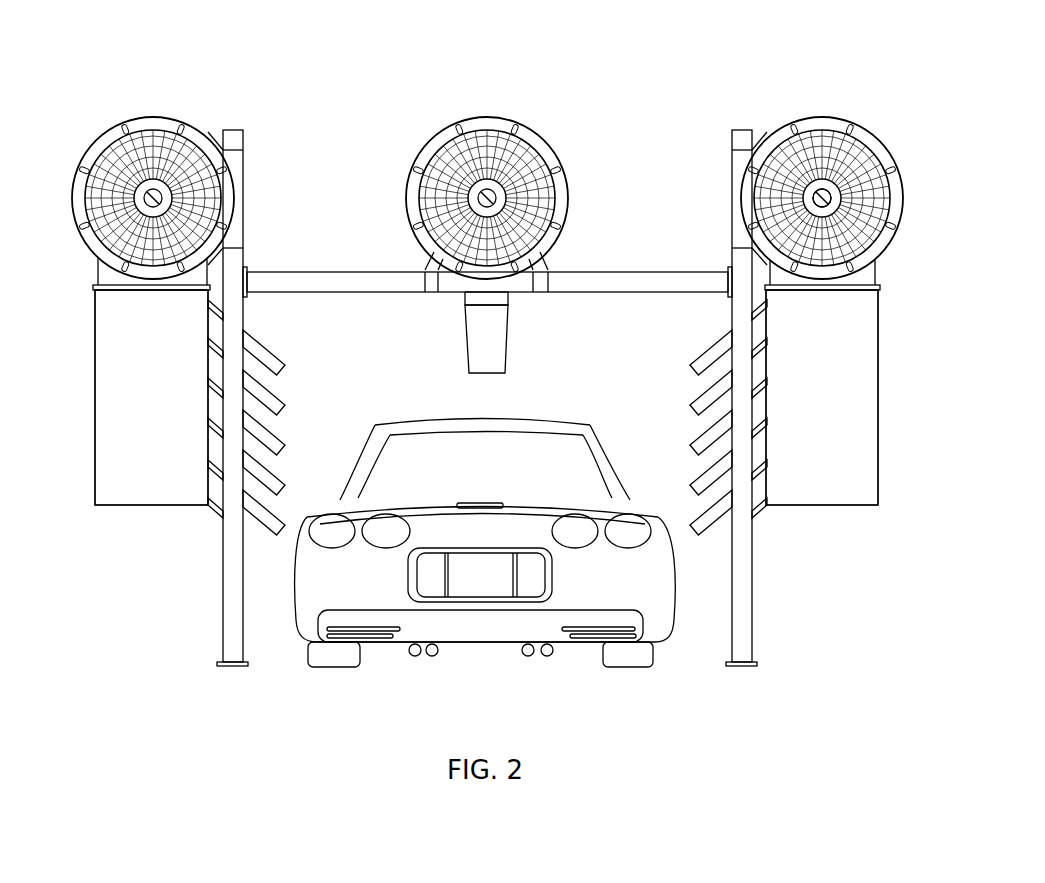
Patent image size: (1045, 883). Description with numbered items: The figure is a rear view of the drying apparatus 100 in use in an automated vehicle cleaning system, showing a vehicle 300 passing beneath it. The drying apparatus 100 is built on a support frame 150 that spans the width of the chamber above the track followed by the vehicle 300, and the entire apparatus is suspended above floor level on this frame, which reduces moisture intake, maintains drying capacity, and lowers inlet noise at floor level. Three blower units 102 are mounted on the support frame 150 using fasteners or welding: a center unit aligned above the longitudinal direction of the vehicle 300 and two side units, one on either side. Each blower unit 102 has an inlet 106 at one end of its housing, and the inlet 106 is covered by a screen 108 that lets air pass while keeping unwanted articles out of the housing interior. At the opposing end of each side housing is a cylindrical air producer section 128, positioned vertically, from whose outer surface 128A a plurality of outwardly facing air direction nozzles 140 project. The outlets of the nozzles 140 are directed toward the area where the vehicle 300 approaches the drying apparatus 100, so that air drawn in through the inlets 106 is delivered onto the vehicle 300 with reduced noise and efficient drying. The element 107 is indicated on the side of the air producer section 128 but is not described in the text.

The drying apparatus 100 is at (666, 88).
The blower unit 102 is at (128, 96).
The inlet 106 is at (821, 92).
The housing side panel 107 is at (878, 448).
The screen 108 is at (822, 198).
The air producer section 128 is at (118, 406).
The outer surface 128A is at (97, 340).
The air direction nozzle 140 is at (262, 527).
The support frame 150 is at (345, 272).
The vehicle 300 is at (465, 647).